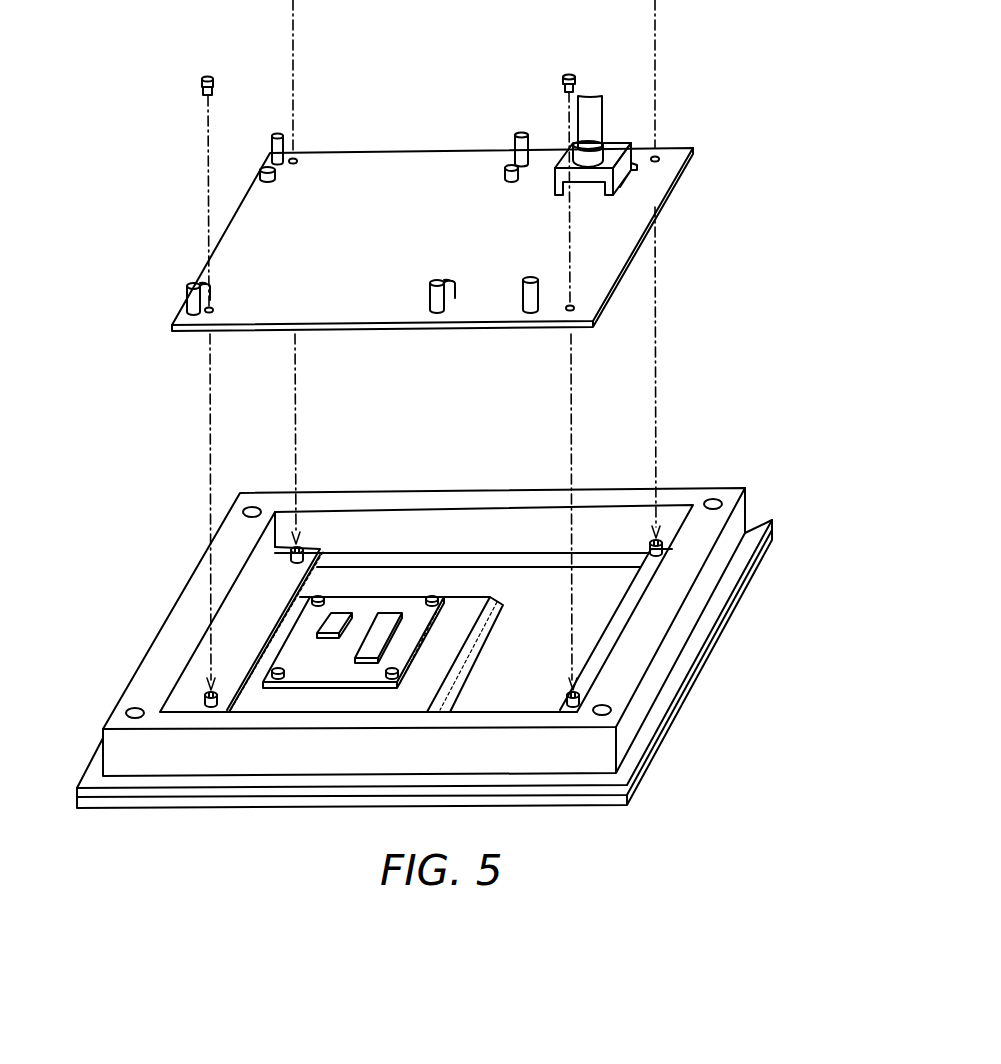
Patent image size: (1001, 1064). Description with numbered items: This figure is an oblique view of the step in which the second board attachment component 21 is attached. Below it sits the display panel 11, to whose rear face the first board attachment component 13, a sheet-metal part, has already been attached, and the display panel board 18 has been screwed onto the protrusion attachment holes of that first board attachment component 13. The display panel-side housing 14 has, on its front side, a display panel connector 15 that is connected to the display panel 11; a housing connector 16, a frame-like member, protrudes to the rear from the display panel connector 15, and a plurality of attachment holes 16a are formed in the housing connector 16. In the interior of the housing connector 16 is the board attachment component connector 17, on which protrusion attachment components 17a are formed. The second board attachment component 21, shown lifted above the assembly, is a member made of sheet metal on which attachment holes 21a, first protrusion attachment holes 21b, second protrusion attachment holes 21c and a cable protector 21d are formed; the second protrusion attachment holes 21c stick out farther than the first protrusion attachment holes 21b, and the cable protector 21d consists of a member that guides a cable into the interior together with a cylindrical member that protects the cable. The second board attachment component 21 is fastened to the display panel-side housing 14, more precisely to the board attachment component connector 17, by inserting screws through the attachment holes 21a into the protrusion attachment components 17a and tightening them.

The display panel 11 is at (665, 726).
The first board attachment component 13 is at (477, 674).
The display panel-side housing 14 is at (782, 498).
The display panel connector 15 is at (757, 520).
The housing connector 16 is at (467, 502).
The attachment holes 16a is at (710, 497).
The board attachment component connector 17 is at (240, 650).
The protrusion attachment components 17a is at (291, 558).
The display panel board 18 is at (370, 597).
The second board attachment component 21 is at (717, 142).
The attachment holes 21a is at (298, 158).
The first protrusion attachment holes 21b is at (260, 173).
The second protrusion attachment holes 21c is at (185, 294).
The cable protector 21d is at (610, 140).